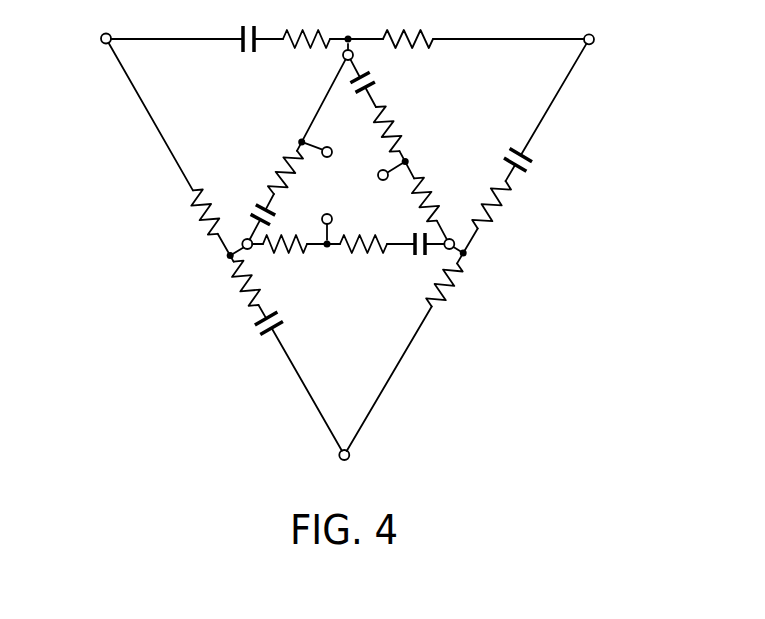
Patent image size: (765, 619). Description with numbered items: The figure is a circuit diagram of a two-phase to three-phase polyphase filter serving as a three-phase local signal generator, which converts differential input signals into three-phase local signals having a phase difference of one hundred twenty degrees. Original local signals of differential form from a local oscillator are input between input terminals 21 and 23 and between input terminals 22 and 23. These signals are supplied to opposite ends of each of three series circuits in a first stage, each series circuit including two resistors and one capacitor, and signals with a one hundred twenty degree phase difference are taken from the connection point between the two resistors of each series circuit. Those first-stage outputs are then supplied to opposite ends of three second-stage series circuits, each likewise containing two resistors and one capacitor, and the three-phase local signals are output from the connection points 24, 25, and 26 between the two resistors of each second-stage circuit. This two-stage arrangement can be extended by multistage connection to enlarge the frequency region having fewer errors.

The input terminal 21 is at (101, 38).
The input terminal 22 is at (594, 39).
The input terminal 23 is at (349, 455).
The connection point 24 is at (332, 150).
The connection point 25 is at (380, 180).
The connection point 26 is at (326, 214).